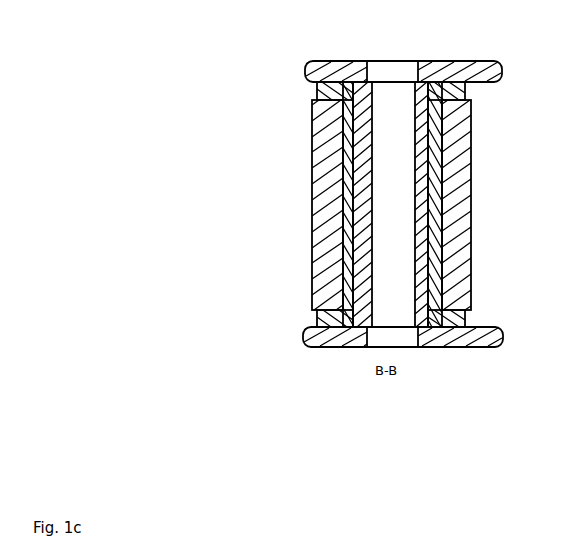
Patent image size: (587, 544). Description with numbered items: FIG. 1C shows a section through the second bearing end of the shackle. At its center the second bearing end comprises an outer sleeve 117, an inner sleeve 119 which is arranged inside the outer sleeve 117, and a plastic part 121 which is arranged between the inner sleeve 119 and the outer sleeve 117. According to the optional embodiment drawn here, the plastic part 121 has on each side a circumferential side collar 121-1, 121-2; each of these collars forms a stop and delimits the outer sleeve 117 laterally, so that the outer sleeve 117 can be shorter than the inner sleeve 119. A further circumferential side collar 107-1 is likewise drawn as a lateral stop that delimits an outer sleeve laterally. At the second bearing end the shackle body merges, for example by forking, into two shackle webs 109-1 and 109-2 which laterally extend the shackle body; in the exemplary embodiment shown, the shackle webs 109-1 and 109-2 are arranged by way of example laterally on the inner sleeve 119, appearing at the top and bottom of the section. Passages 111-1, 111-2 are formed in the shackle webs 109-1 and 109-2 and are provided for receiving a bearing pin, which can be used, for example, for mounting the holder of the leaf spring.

The circumferential side collar 107-1 is at (460, 253).
The shackle web 109-1 is at (463, 340).
The shackle web 109-2 is at (455, 72).
The passage 111-1 is at (395, 338).
The passage 111-2 is at (383, 72).
The outer sleeve 117 is at (323, 163).
The inner sleeve 119 is at (425, 178).
The plastic part 121 is at (347, 213).
The circumferential side collar 121-1 is at (462, 322).
The circumferential side collar 121-2 is at (463, 96).